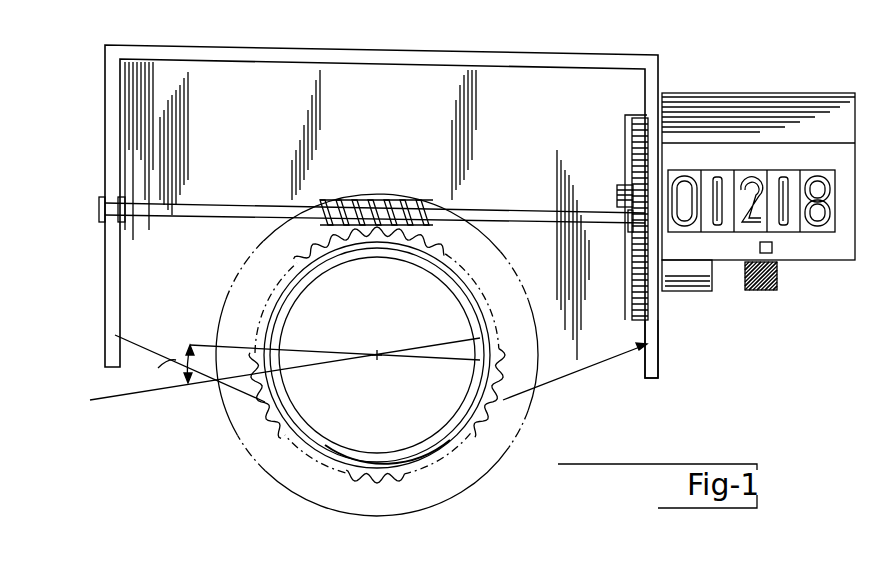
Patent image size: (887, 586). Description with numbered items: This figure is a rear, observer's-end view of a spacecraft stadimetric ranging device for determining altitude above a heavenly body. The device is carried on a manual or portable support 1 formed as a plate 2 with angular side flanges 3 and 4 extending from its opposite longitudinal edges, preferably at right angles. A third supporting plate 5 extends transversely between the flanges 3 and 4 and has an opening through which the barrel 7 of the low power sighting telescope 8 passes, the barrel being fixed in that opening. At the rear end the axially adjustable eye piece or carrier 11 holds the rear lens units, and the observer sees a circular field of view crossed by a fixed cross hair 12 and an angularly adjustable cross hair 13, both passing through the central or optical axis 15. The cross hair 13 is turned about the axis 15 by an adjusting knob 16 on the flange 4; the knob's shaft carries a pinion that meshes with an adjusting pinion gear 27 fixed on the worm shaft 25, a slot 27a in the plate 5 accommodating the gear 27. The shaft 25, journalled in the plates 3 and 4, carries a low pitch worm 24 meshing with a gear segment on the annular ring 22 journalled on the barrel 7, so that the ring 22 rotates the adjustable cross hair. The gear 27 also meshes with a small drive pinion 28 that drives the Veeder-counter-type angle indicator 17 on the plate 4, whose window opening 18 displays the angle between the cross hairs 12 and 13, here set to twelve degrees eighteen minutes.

The manual or portable support 1 is at (540, 47).
The plate 2 is at (254, 52).
The side flange 3 is at (105, 112).
The side flange 4 is at (659, 314).
The third supporting plate 5 is at (596, 360).
The barrel 7 is at (490, 477).
The sighting tube or low power telescope 8 is at (538, 410).
The eye piece or carrier 11 is at (318, 456).
The fixed cross hair 12 is at (316, 362).
The adjustable cross hair 13 is at (302, 350).
The central or optical axis 15 is at (380, 352).
The adjusting knob 16 is at (779, 274).
The angle indicator 17 is at (682, 108).
The window opening 18 is at (727, 160).
The annular ring 22 is at (458, 444).
The worm 24 is at (326, 200).
The shaft 25 is at (492, 213).
The adjusting pinion gear 27 is at (632, 280).
The slot 27a is at (626, 130).
The small drive pinion 28 is at (616, 194).